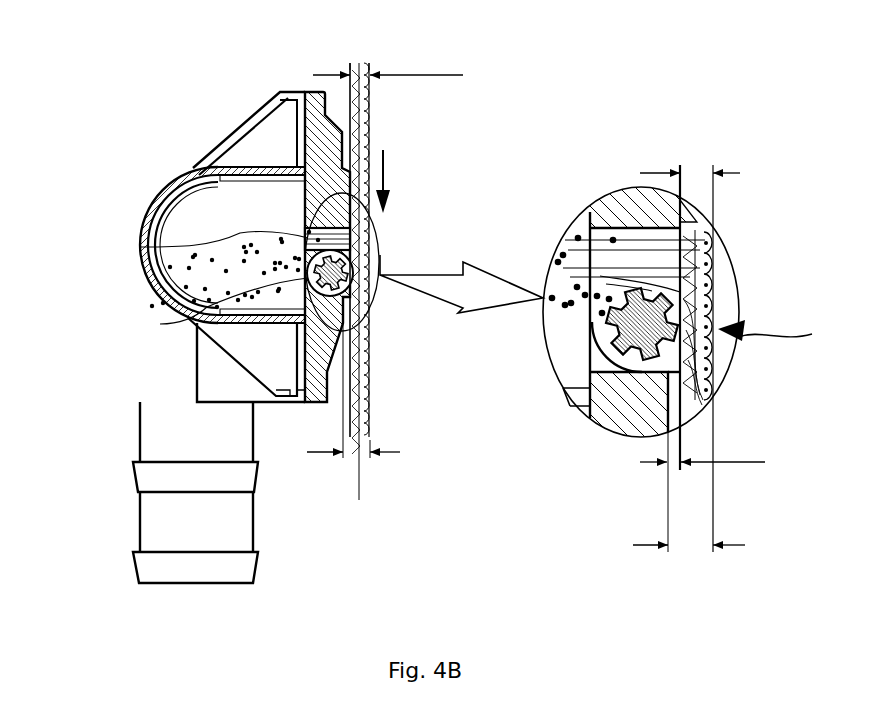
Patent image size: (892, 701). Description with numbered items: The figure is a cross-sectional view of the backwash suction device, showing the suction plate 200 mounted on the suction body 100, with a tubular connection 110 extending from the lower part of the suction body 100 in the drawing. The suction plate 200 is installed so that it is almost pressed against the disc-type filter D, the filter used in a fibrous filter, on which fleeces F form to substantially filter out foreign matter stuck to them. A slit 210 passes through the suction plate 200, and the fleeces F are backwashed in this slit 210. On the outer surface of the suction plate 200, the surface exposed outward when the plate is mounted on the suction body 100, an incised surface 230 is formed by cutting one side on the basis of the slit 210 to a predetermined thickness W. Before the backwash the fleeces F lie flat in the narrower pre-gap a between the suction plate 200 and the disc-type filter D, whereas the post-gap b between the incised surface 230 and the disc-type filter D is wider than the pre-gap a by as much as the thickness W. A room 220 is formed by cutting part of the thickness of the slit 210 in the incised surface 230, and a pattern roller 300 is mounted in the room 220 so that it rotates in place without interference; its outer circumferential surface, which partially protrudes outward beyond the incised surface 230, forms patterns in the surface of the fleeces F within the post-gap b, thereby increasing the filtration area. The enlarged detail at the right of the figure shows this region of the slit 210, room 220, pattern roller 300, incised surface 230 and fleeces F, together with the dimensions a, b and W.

The suction body 100 is at (204, 170).
The pipe connector 110 is at (166, 527).
The suction plate 200 is at (317, 96).
The slit 210 is at (140, 247).
The room 220 is at (160, 324).
The incised surface 230 is at (702, 407).
The pattern roller 300 is at (607, 343).
The fleeces F is at (368, 147).
The disc-type filter D is at (416, 511).
The pre-gap a is at (526, 106).
The post-gap b is at (526, 426).
The thickness W is at (702, 442).